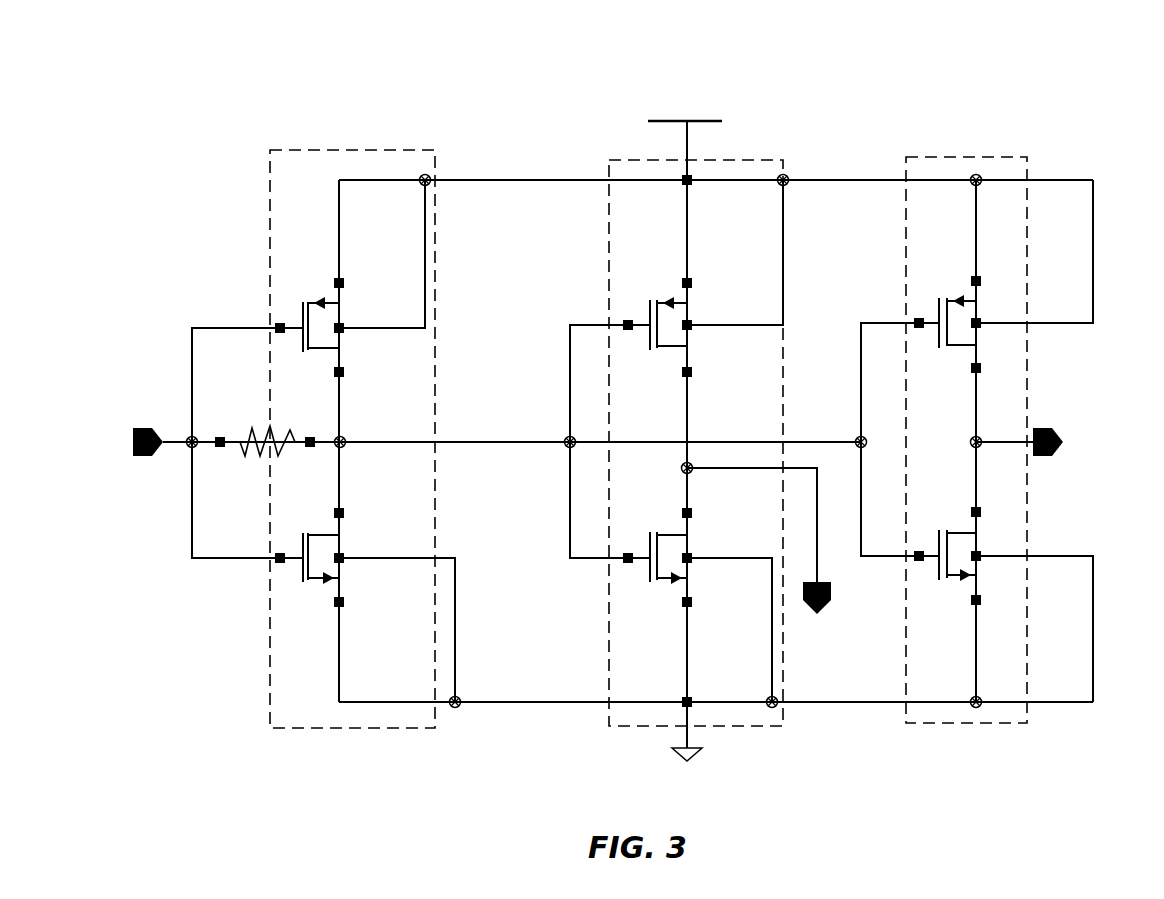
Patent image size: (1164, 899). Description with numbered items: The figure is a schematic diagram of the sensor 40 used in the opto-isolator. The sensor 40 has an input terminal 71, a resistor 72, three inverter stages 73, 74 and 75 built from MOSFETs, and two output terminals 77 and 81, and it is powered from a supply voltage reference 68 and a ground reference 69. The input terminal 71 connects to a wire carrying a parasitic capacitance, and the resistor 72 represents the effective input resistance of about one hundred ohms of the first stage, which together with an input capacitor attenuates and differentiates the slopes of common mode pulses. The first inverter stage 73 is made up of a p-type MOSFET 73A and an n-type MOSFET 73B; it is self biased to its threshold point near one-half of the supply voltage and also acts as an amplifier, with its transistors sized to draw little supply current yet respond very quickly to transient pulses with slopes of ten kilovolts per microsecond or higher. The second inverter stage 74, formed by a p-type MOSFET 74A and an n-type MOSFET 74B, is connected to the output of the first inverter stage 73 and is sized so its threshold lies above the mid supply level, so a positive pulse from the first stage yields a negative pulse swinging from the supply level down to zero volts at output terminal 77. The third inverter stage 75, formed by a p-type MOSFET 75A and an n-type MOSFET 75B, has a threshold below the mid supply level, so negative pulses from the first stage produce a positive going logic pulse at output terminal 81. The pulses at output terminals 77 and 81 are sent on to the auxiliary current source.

The sensor 40 is at (216, 88).
The supply voltage reference 68 is at (703, 120).
The ground reference 69 is at (700, 755).
The input terminal 71 is at (178, 450).
The resistor 72 is at (260, 452).
The first inverter stage 73 is at (436, 152).
The p-type MOSFET 73A is at (303, 300).
The n-type MOSFET 73B is at (300, 580).
The second inverter stage 74 is at (785, 160).
The p-type MOSFET 74A is at (651, 300).
The n-type MOSFET 74B is at (648, 580).
The third inverter stage 75 is at (1018, 157).
The p-type MOSFET 75A is at (939, 298).
The n-type MOSFET 75B is at (937, 578).
The output terminal 77 is at (830, 605).
The output terminal 81 is at (1050, 456).